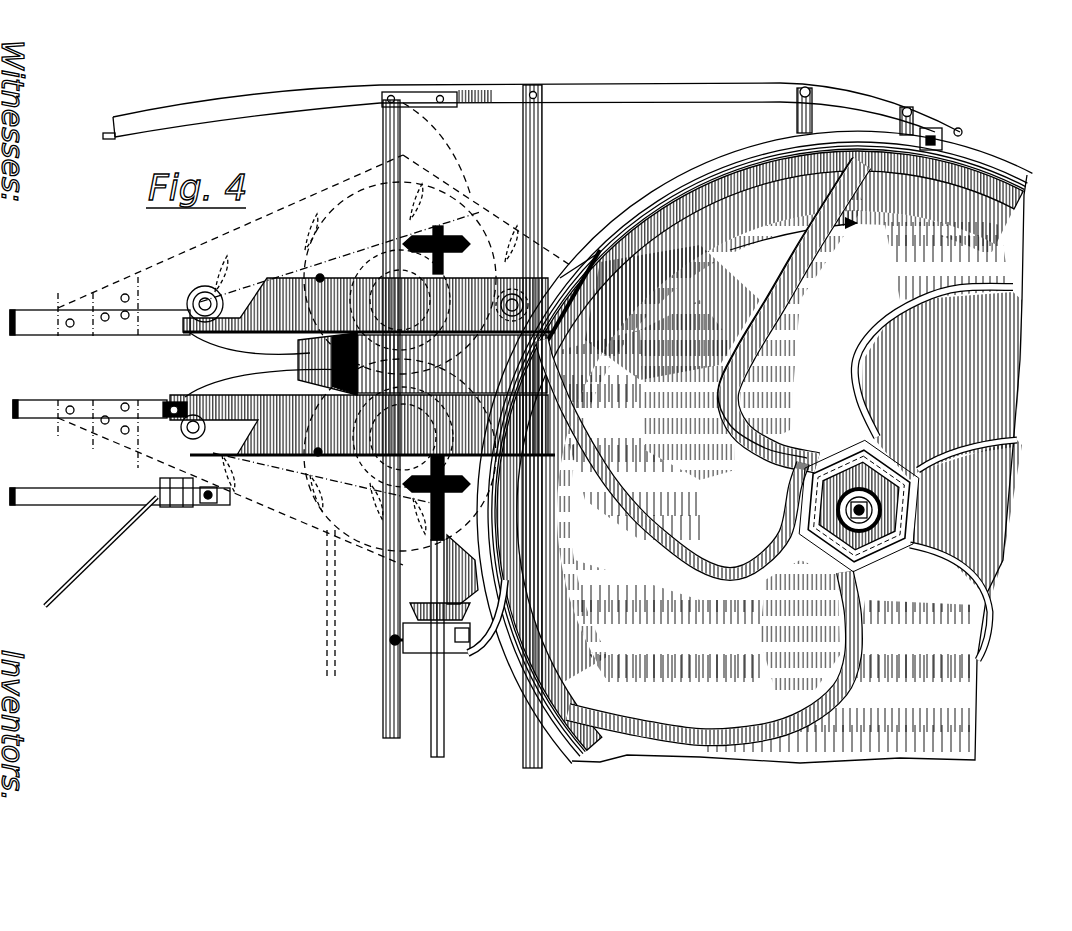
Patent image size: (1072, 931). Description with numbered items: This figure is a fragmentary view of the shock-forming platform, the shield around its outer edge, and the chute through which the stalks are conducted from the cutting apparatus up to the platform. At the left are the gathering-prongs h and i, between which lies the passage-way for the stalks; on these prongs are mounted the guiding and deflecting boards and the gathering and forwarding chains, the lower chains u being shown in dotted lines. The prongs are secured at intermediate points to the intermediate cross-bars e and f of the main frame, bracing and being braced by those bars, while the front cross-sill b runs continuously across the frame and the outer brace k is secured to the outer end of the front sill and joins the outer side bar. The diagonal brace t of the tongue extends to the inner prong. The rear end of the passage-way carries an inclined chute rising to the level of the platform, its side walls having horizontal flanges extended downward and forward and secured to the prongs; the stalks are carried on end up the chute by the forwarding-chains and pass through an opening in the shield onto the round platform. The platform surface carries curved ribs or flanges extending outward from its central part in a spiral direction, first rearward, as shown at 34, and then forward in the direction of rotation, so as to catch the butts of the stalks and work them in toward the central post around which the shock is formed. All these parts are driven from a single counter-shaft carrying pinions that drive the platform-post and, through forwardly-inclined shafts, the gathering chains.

The outer brace k is at (236, 111).
The intermediate cross-bar f is at (795, 108).
The intermediate cross-bar e is at (542, 170).
The gathering and forwarding chain u is at (300, 233).
The gathering-prong h is at (28, 333).
The gathering-prong i is at (41, 400).
The rearwardly-extending portion of flange 34 is at (787, 450).
The diagonal brace t is at (120, 542).
The front cross-sill b is at (384, 598).